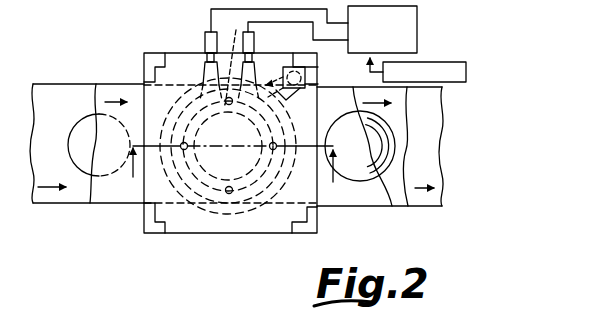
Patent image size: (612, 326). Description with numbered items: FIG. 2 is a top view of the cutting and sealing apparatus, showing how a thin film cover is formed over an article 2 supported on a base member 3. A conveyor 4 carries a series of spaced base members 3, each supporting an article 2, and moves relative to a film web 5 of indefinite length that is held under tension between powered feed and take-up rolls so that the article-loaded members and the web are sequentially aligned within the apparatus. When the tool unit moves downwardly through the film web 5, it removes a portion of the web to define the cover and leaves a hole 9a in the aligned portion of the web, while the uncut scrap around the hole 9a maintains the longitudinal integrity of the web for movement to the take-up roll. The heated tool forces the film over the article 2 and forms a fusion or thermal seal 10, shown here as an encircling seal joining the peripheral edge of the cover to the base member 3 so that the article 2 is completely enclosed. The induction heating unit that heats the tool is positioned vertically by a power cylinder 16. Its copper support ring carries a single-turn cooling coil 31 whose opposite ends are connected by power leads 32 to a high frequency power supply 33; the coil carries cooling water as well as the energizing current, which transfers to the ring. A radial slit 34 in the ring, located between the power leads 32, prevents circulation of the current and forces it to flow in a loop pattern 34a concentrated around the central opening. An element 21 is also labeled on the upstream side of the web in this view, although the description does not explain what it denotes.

The article 2 is at (372, 140).
The base member 3 is at (126, 193).
The conveyor 4 is at (43, 203).
The film web 5 is at (123, 196).
The hole 9a is at (368, 181).
The fusion or thermal seal 10 is at (382, 131).
The power cylinder 16 is at (306, 72).
The inlet valve 21 is at (76, 129).
The cooling coil 31 is at (205, 43).
The power leads 32 is at (278, 33).
The high frequency power supply 33 is at (418, 40).
The radial gap or slit 34 is at (229, 58).
The loop pattern 34a is at (192, 206).